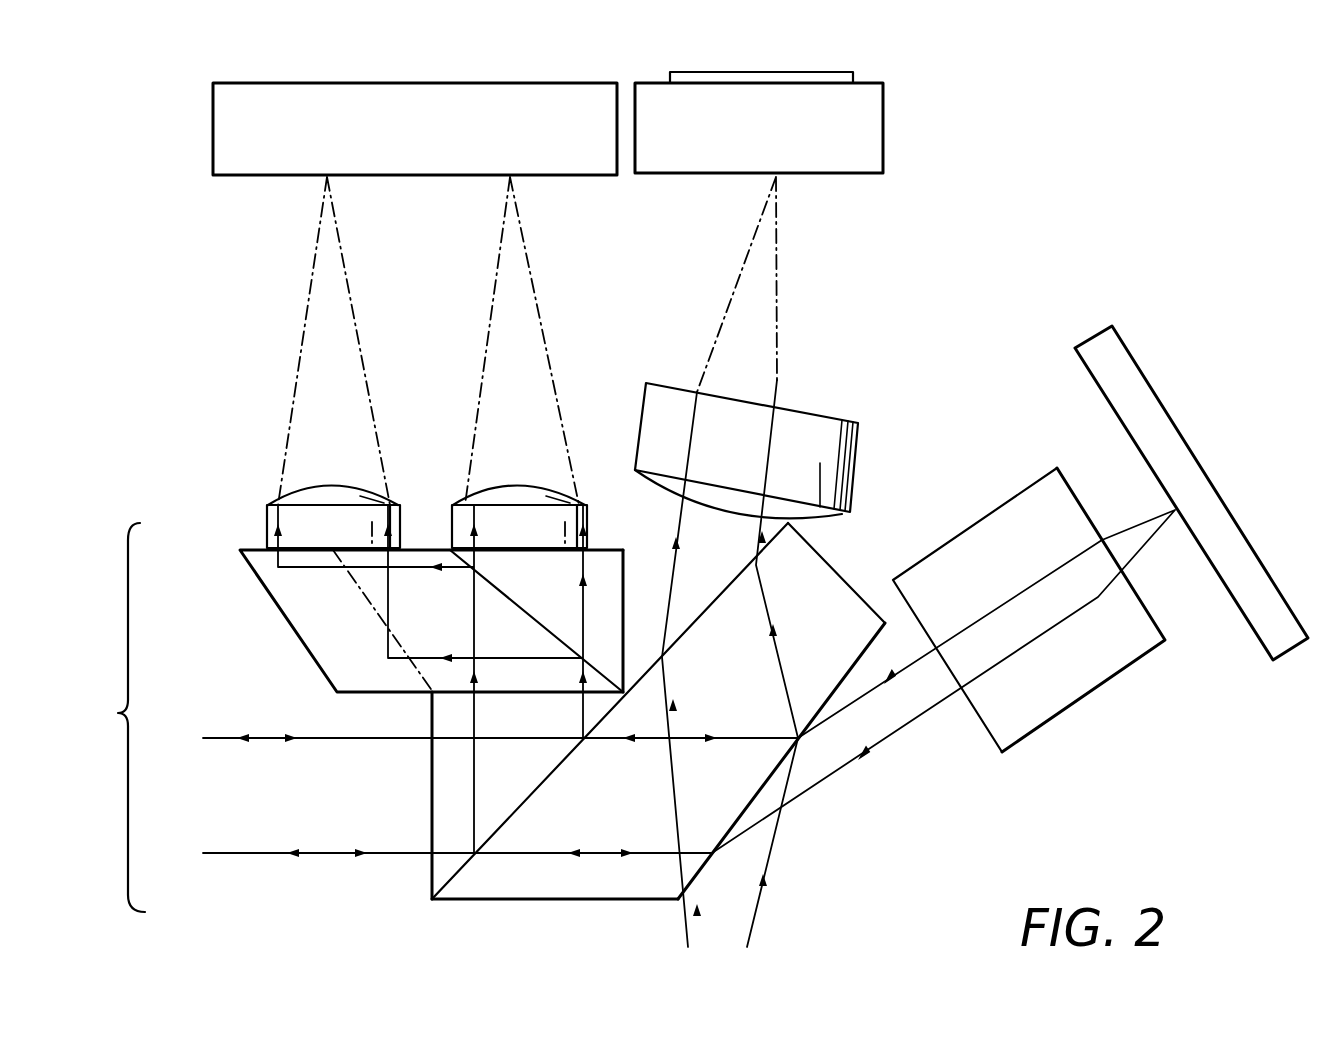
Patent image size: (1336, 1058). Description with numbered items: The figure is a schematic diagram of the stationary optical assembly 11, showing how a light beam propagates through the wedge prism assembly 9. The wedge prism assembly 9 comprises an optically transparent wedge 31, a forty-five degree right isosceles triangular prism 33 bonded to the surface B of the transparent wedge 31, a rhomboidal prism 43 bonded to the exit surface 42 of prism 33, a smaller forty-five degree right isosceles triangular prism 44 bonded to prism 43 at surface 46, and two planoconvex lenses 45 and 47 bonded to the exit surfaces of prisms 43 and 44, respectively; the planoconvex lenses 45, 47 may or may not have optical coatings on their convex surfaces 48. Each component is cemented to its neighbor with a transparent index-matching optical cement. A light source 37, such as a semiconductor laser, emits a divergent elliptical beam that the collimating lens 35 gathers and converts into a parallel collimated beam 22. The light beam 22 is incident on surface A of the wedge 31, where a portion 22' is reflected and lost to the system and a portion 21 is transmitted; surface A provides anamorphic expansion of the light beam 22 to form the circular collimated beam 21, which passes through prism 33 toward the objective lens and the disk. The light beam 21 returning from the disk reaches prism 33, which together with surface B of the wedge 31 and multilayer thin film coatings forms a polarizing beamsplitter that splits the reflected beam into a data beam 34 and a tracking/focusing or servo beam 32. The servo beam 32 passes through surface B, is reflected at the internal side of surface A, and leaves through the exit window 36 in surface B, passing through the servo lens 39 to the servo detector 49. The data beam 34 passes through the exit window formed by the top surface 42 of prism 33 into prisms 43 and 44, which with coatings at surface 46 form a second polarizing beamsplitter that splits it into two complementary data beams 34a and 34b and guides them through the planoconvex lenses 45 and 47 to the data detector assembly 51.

The wedge prism assembly 9 is at (100, 733).
The stationary optical assembly 11 is at (1182, 838).
The transmitted light beam 21 is at (243, 833).
The collimated light beam 22 is at (943, 681).
The reflected beam portion 22' is at (792, 663).
The optically transparent wedge 31 is at (650, 890).
The servo beam 32 is at (766, 368).
The 45 degree right isosceles triangular prism 33 is at (437, 828).
The data beam 34 is at (518, 668).
The complementary data beam 34a is at (533, 363).
The complementary data beam 34b is at (341, 354).
The collimating lens 35 is at (1081, 699).
The exit window 36 is at (702, 605).
The light source 37 is at (1173, 427).
The servo lens 39 is at (858, 442).
The exit surface 42 is at (440, 688).
The rhomboidal prism 43 is at (307, 630).
The smaller 45 degree right isosceles triangular prism 44 is at (608, 605).
The planoconvex lens 45 is at (267, 511).
The surface 46 is at (520, 603).
The planoconvex lens 47 is at (587, 530).
The convex surfaces 48 is at (322, 488).
The servo detector 49 is at (885, 118).
The data detector assembly 51 is at (268, 167).
The surface A is at (765, 788).
The surface B is at (538, 789).